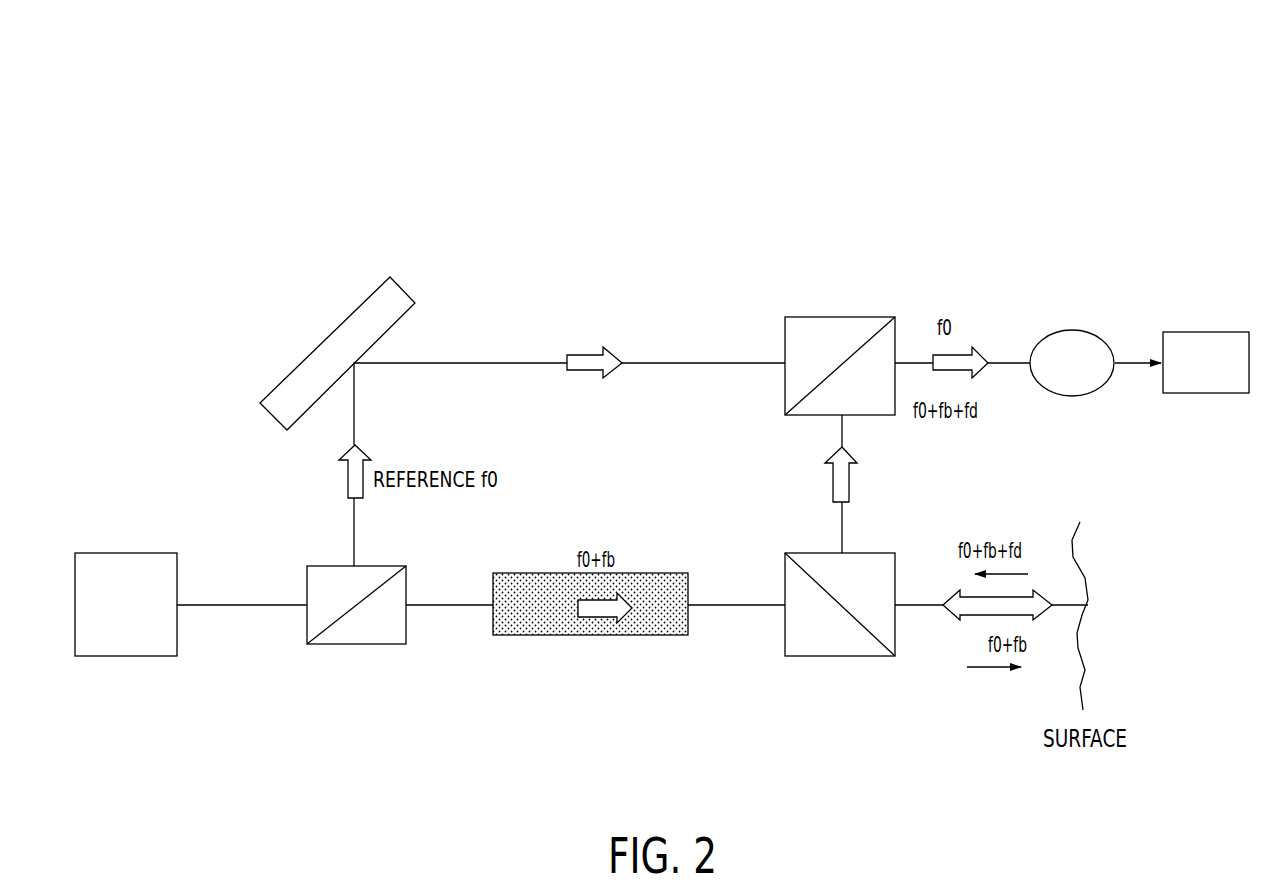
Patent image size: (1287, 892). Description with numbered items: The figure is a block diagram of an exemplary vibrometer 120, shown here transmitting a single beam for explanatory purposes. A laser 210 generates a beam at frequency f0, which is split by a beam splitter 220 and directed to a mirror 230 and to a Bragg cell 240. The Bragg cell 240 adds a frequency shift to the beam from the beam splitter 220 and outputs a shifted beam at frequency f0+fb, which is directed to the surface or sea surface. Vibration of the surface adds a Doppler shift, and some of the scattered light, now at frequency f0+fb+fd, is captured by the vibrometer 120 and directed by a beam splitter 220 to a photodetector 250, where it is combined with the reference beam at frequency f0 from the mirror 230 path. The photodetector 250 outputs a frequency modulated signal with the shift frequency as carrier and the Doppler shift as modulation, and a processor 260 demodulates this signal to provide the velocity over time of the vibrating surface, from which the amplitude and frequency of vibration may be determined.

The vibrometer 120 is at (228, 152).
The laser 210 is at (118, 552).
The beam splitter 220 is at (372, 647).
The mirror 230 is at (343, 322).
The Bragg cell 240 is at (587, 635).
The photodetector 250 is at (1072, 328).
The processor 260 is at (1210, 330).